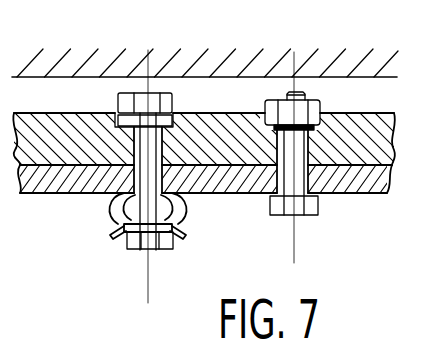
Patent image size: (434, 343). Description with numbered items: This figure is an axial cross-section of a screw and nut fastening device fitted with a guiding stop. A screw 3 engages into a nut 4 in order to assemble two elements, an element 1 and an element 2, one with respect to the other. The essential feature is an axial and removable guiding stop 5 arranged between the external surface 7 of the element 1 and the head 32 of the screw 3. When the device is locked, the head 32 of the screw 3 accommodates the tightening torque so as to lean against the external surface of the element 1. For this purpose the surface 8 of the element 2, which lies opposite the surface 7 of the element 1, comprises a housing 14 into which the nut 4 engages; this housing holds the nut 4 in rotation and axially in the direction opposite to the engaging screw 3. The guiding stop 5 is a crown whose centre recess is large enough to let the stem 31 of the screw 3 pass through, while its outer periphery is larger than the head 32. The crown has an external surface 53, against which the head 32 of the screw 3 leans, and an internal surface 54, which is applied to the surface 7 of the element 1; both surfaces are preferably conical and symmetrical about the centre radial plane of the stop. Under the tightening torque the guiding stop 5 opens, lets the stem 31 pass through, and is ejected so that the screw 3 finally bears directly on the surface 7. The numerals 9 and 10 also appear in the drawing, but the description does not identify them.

The element to be assembled 1 is at (367, 180).
The element to be assembled 2 is at (375, 138).
The screw 3 is at (151, 257).
The nut 4 is at (157, 156).
The guiding stop 5 is at (162, 269).
The external surface 7 is at (332, 193).
The surface 8 is at (73, 112).
The underside of lower plate 9 is at (104, 196).
The bore 10 is at (130, 141).
The housing 14 is at (176, 101).
The stem 31 is at (116, 229).
The head 32 is at (139, 247).
The external surface 53 is at (158, 249).
The internal surface 54 is at (189, 195).